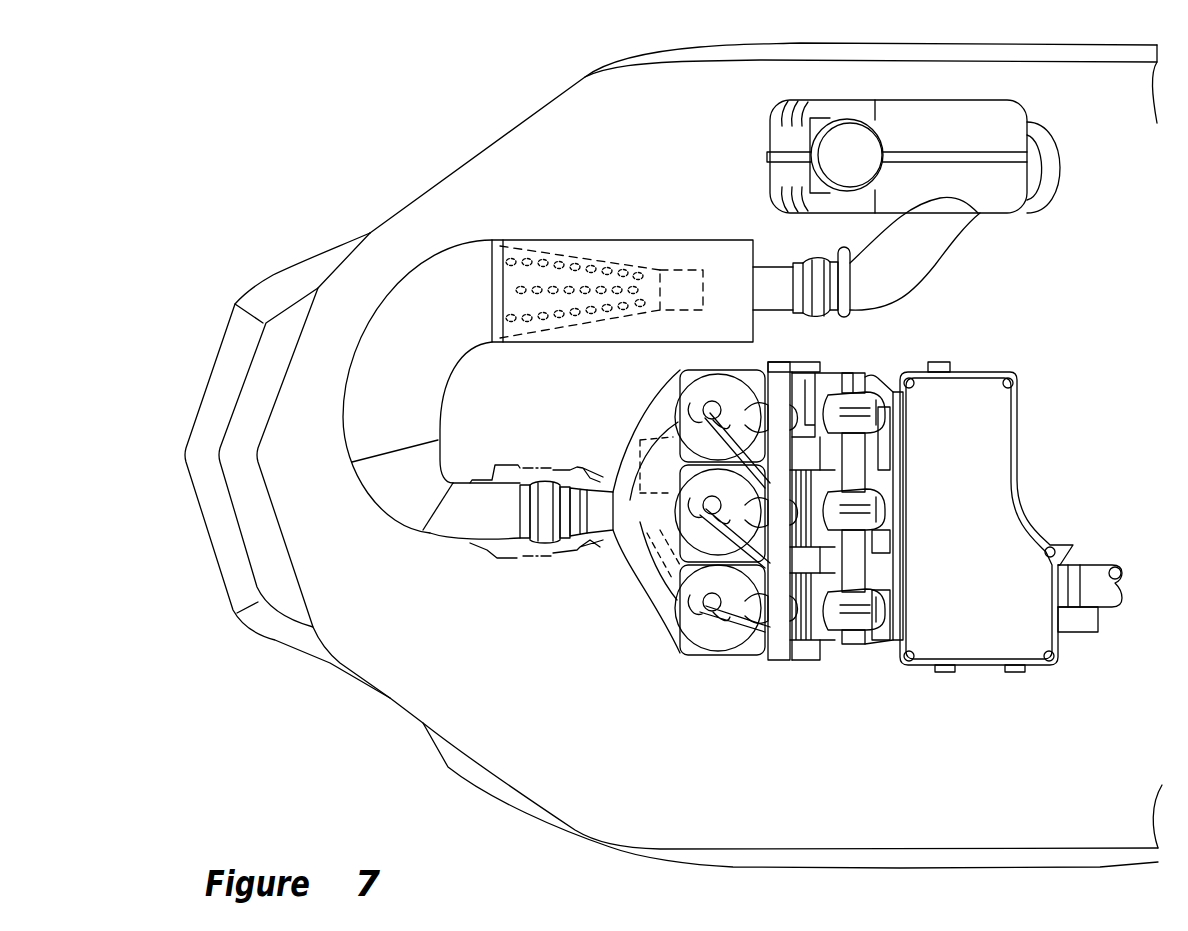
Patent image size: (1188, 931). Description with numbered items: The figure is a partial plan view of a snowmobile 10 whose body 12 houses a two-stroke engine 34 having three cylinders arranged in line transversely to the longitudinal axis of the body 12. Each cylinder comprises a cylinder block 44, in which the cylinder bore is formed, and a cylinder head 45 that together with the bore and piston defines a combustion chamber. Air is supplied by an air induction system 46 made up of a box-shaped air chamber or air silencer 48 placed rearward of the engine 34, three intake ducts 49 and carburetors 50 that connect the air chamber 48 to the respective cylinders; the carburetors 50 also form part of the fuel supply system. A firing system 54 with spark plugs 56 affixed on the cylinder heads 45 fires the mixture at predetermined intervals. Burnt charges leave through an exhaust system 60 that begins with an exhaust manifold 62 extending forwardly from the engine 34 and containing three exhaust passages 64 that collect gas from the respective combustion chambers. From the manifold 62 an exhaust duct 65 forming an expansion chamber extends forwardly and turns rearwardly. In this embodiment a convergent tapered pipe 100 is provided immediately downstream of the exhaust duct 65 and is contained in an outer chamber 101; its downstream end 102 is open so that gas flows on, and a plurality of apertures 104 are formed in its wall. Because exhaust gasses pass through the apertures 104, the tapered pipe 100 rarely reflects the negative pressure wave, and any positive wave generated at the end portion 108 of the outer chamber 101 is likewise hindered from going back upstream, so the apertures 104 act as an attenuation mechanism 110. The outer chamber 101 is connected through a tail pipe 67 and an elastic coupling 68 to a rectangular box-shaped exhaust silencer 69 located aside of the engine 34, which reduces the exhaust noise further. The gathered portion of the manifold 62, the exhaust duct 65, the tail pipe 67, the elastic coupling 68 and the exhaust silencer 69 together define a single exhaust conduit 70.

The snowmobile 10 is at (440, 770).
The body 12 is at (518, 130).
The engine 34 is at (800, 368).
The cylinder block 44 is at (775, 362).
The cylinder head 45 is at (712, 370).
The air induction system 46 is at (1040, 402).
The air chamber 48 is at (990, 668).
The intake ducts 49 is at (887, 378).
The carburetors 50 is at (830, 395).
The firing system 54 is at (628, 617).
The spark plugs 56 is at (690, 405).
The exhaust system 60 is at (398, 546).
The exhaust manifold 62 is at (603, 554).
The exhaust passages 64 is at (615, 448).
The exhaust duct 65 is at (368, 497).
The tail pipe 67 is at (773, 266).
The elastic coupling 68 is at (960, 258).
The exhaust silencer 69 is at (955, 106).
The exhaust conduit 70 is at (450, 253).
The tapered pipe 100 is at (598, 243).
The outer chamber 101 is at (697, 238).
The downstream end 102 is at (703, 285).
The apertures 104 is at (605, 305).
The end portion 108 is at (750, 248).
The attenuation mechanism 110 is at (536, 240).